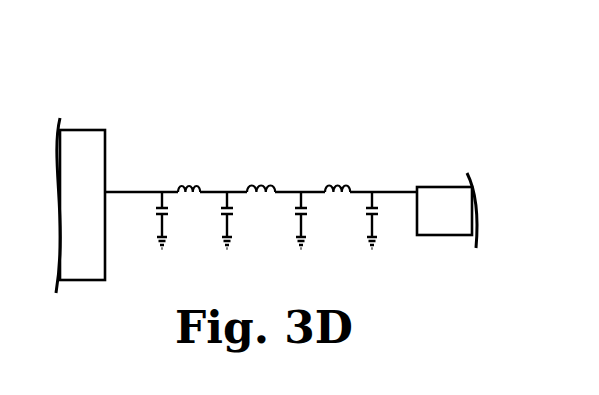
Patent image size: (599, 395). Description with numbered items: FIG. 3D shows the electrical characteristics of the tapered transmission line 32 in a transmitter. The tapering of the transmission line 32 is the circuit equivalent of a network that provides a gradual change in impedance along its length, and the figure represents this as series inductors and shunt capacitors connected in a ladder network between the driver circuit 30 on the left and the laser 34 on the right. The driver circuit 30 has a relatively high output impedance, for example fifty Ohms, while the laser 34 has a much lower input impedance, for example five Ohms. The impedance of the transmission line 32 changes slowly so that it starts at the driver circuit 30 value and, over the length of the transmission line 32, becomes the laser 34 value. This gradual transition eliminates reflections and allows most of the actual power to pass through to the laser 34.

The driver circuit 30 is at (73, 130).
The transmission line 32 is at (278, 100).
The laser 34 is at (437, 187).